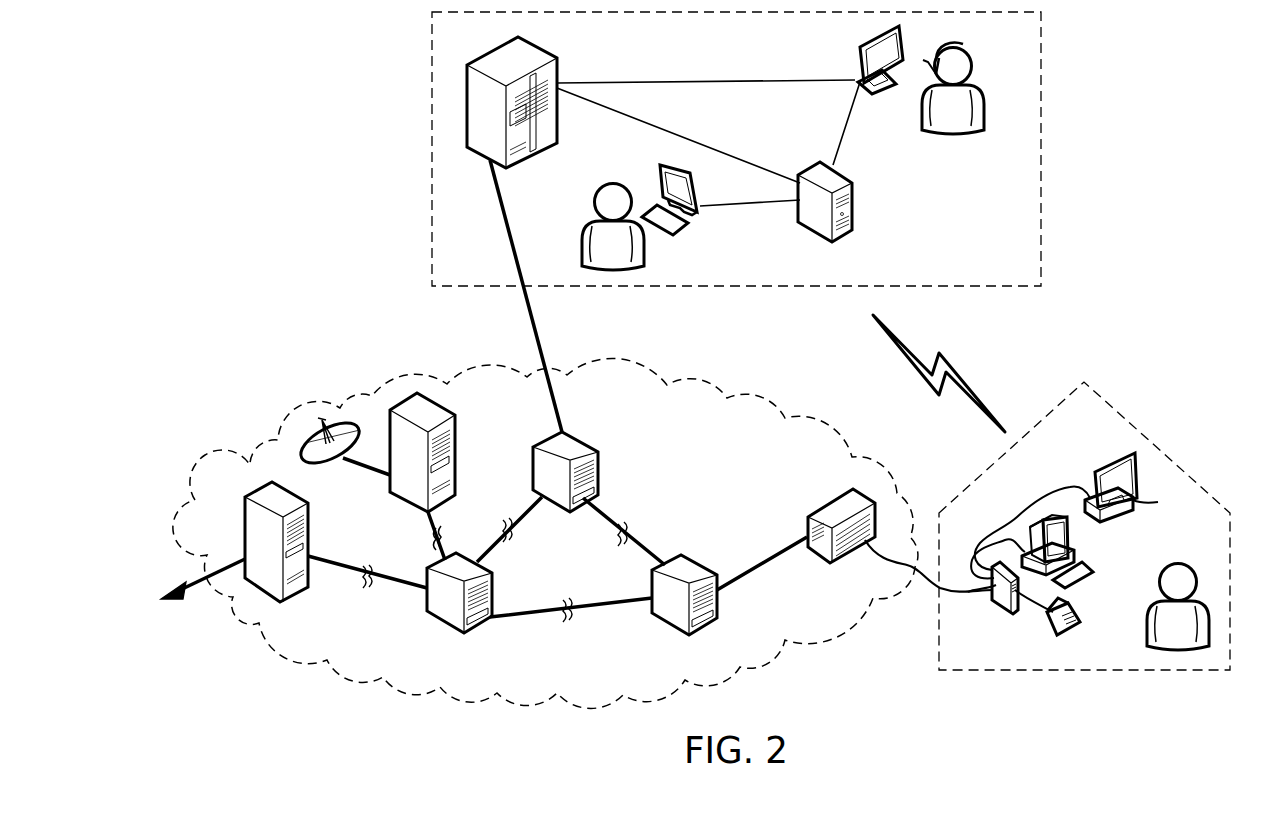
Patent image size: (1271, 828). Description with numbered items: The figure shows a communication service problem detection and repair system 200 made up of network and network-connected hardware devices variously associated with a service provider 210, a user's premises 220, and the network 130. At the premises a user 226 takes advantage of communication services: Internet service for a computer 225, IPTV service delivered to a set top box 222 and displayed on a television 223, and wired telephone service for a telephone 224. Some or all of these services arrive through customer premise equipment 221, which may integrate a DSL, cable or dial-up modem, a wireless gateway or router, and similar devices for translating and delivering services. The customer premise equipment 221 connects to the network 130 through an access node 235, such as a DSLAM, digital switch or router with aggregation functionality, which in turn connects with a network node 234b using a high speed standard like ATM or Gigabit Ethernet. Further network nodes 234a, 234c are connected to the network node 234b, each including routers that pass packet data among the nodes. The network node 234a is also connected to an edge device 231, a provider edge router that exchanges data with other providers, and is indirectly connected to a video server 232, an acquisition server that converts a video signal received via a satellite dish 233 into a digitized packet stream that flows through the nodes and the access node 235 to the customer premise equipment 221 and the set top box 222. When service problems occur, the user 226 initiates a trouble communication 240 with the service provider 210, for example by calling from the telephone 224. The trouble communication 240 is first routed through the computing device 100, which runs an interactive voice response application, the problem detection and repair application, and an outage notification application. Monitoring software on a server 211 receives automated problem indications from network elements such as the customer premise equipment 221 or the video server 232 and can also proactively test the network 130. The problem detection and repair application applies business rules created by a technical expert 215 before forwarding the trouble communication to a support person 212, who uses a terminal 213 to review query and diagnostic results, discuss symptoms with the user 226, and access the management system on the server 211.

The communication service problem detection and repair system 200 is at (243, 130).
The service provider 210 is at (432, 192).
The server 211 is at (551, 53).
The support person 212 is at (952, 135).
The terminal 213 is at (852, 66).
The technical expert 215 is at (590, 218).
The computing device 100 is at (853, 205).
The network 130 is at (705, 378).
The edge device 231 is at (298, 595).
The video server 232 is at (455, 432).
The satellite dish 233 is at (333, 462).
The network node 234a is at (475, 630).
The network node 234b is at (650, 615).
The network node 234c is at (558, 512).
The access node 235 is at (835, 500).
The trouble communication 240 is at (950, 366).
The user's premises 220 is at (1133, 425).
The customer premise equipment 221 is at (985, 618).
The set top box 222 is at (1140, 505).
The television 223 is at (1108, 448).
The telephone 224 is at (1050, 633).
The computer 225 is at (1075, 548).
The user 226 is at (1148, 607).